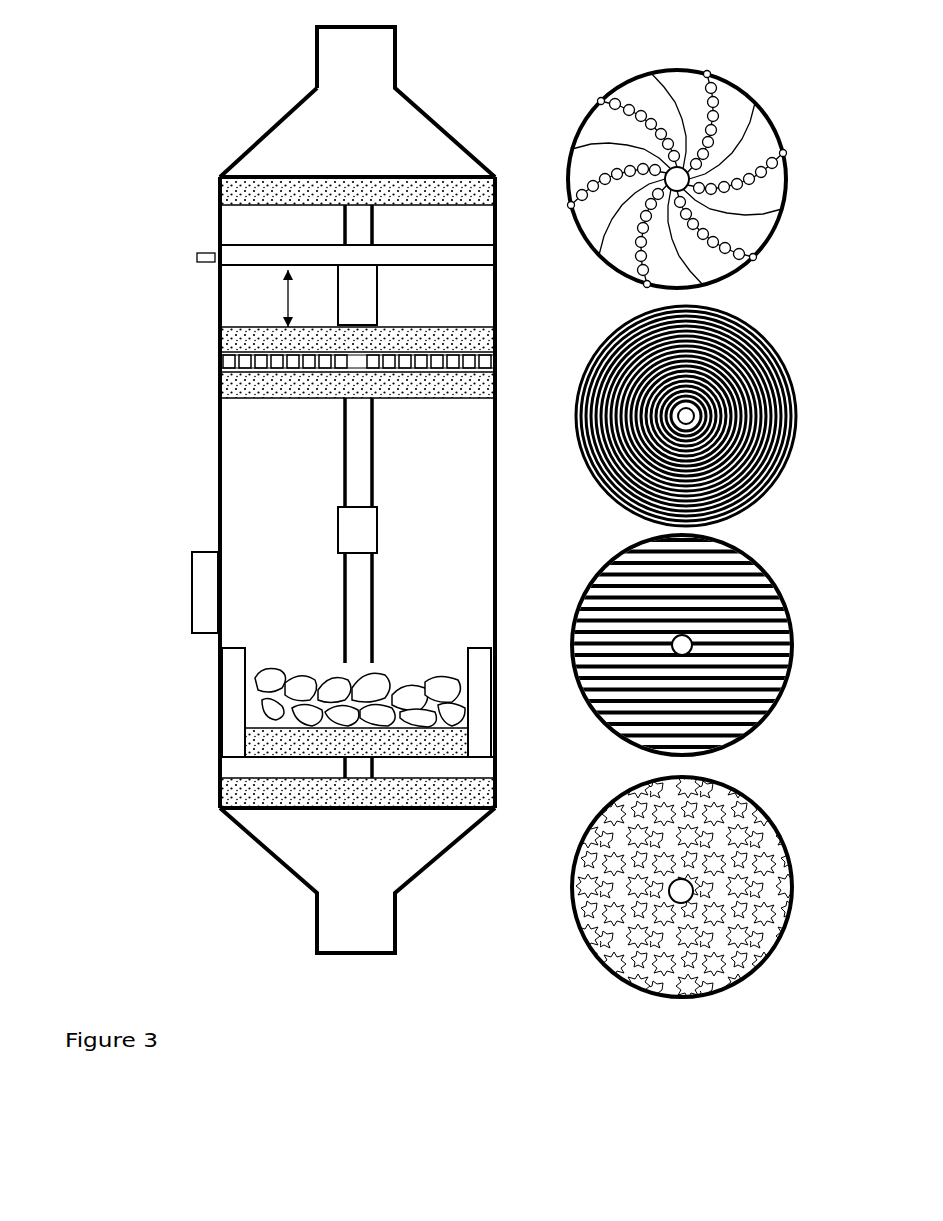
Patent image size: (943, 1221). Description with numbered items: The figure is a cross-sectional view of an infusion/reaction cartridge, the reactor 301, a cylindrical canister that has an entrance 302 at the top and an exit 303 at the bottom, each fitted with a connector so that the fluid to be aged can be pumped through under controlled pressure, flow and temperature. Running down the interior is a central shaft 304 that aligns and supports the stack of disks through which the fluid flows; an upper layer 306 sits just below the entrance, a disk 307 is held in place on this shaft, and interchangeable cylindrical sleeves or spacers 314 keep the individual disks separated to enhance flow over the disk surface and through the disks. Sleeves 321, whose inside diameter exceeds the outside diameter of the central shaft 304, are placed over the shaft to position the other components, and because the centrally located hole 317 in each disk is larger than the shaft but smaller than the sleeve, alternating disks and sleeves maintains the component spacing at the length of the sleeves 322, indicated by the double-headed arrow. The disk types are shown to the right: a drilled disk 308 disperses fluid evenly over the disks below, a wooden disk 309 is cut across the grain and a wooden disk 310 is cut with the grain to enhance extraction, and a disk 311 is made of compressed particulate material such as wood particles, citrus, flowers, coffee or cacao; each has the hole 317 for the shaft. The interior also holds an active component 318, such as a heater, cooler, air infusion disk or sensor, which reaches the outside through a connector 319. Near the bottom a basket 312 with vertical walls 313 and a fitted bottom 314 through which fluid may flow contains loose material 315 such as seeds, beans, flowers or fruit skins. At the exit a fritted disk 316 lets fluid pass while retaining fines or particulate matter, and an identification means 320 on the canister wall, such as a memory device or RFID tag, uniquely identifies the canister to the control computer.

The reactor 301 is at (217, 522).
The entrance 302 is at (317, 62).
The exit 303 is at (315, 915).
The central shaft 304 is at (333, 452).
The top filter layer 306 is at (290, 195).
The disk 307 is at (278, 378).
The drilled disk 308 is at (701, 179).
The wooden disk cut across the grain 309 is at (706, 416).
The wooden disk cut with the grain 310 is at (701, 645).
The compressed particulate disk 311 is at (705, 887).
The basket 312 is at (218, 703).
The vertical walls 313 is at (457, 707).
The spacer 314 is at (432, 362).
The loose material 315 is at (383, 665).
The fritted disk 316 is at (265, 795).
The centrally located hole 317 is at (700, 432).
The active component 318 is at (415, 245).
The connector 319 is at (195, 262).
The identification means 320 is at (190, 602).
The cylindrical sleeve 321 is at (333, 523).
The length of the sleeves 322 is at (278, 293).